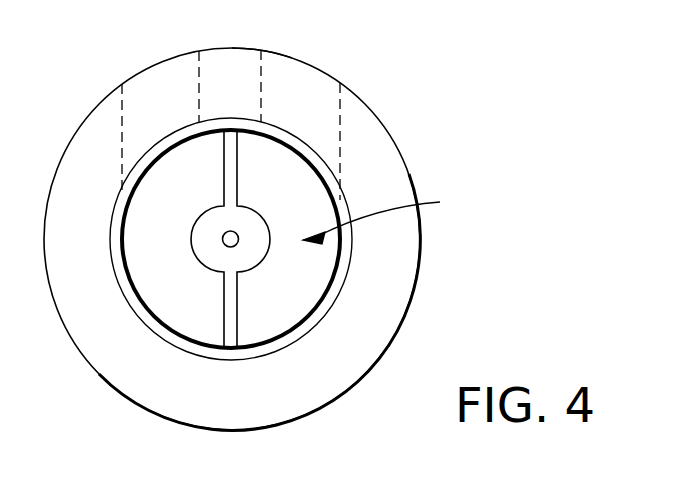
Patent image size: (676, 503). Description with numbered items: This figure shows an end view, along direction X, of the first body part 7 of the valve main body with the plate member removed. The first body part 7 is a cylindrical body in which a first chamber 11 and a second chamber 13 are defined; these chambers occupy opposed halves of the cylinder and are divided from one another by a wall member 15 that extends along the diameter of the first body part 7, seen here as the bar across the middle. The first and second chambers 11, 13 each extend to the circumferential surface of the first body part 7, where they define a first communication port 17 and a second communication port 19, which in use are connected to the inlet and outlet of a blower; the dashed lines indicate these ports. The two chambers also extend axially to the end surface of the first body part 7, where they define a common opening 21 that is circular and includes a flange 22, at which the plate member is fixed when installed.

The first body part 7 is at (303, 386).
The first chamber 11 is at (178, 318).
The second chamber 13 is at (310, 280).
The wall member 15 is at (238, 193).
The first communication port 17 is at (168, 57).
The second communication port 19 is at (292, 58).
The common opening 21 is at (383, 213).
The flange 22 is at (345, 257).